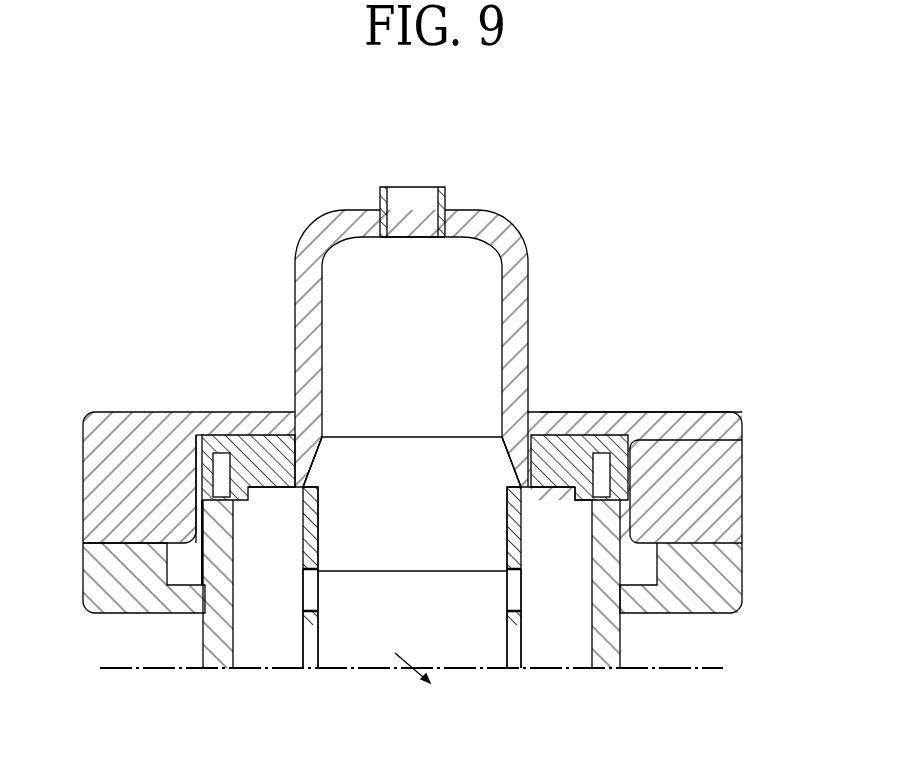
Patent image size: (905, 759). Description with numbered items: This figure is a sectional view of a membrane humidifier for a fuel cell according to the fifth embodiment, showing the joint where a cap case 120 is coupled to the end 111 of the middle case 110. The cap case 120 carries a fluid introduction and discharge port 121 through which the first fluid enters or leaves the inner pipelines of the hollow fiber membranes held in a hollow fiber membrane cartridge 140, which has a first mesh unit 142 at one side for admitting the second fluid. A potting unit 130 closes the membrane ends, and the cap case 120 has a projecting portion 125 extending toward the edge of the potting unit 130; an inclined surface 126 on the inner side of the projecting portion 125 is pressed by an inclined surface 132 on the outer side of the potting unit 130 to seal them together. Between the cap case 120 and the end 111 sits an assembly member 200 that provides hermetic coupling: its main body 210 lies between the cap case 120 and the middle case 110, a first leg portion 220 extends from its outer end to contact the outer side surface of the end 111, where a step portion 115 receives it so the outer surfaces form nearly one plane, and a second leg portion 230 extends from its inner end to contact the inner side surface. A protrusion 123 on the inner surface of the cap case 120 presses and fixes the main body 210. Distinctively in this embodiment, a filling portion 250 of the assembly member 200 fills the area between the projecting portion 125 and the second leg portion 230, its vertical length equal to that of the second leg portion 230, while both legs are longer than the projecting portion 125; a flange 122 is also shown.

The middle case 110 is at (195, 566).
The end of the middle case 111 is at (197, 469).
The step portion 115 is at (197, 492).
The cap case 120 is at (313, 292).
The fluid introduction and discharge port 121 is at (413, 210).
The flange 122 is at (205, 455).
The protrusion 123 is at (220, 450).
The projecting portion 125 is at (300, 425).
The inclined surface 126 is at (477, 434).
The potting unit 130 is at (357, 573).
The inclined surface 132 is at (303, 490).
The hollow fiber membrane cartridge 140 is at (525, 550).
The first mesh unit 142 is at (507, 597).
The assembly member 200 is at (795, 384).
The main body 210 is at (600, 455).
The first leg portion 220 is at (614, 470).
The second leg portion 230 is at (590, 497).
The filling portion 250 is at (560, 410).